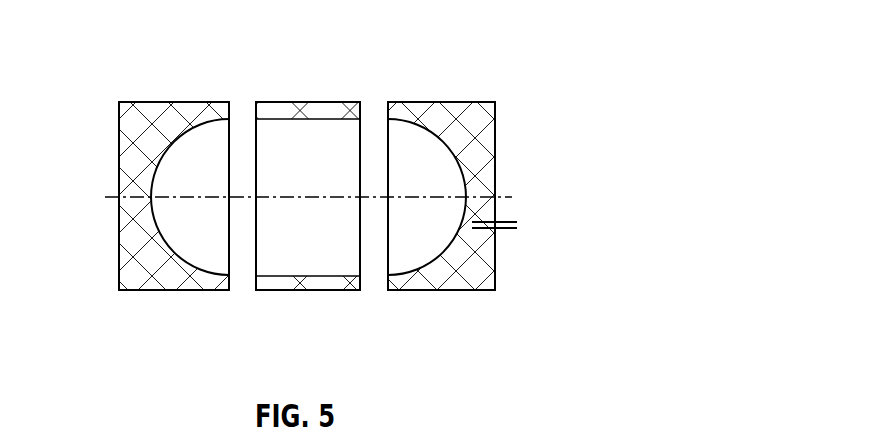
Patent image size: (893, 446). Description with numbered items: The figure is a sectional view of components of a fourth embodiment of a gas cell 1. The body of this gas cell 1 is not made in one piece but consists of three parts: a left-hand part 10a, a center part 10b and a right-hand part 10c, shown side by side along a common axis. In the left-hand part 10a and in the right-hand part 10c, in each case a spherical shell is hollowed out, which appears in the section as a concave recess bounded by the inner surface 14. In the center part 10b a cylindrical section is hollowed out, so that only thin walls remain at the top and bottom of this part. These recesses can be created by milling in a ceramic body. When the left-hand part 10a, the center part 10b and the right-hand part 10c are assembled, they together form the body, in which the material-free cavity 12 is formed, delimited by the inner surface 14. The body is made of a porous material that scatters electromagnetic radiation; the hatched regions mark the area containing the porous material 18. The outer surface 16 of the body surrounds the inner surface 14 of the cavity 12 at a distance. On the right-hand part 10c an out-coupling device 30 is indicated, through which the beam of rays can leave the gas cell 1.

The gas cell 1 is at (109, 68).
The left-hand part 10a is at (182, 290).
The center part 10b is at (313, 290).
The right-hand part 10c is at (443, 290).
The cavity 12 is at (305, 135).
The inner surface 14 is at (153, 228).
The outer surface 16 is at (468, 107).
The area containing the porous material 18 is at (155, 110).
The out-coupling device 30 is at (503, 232).